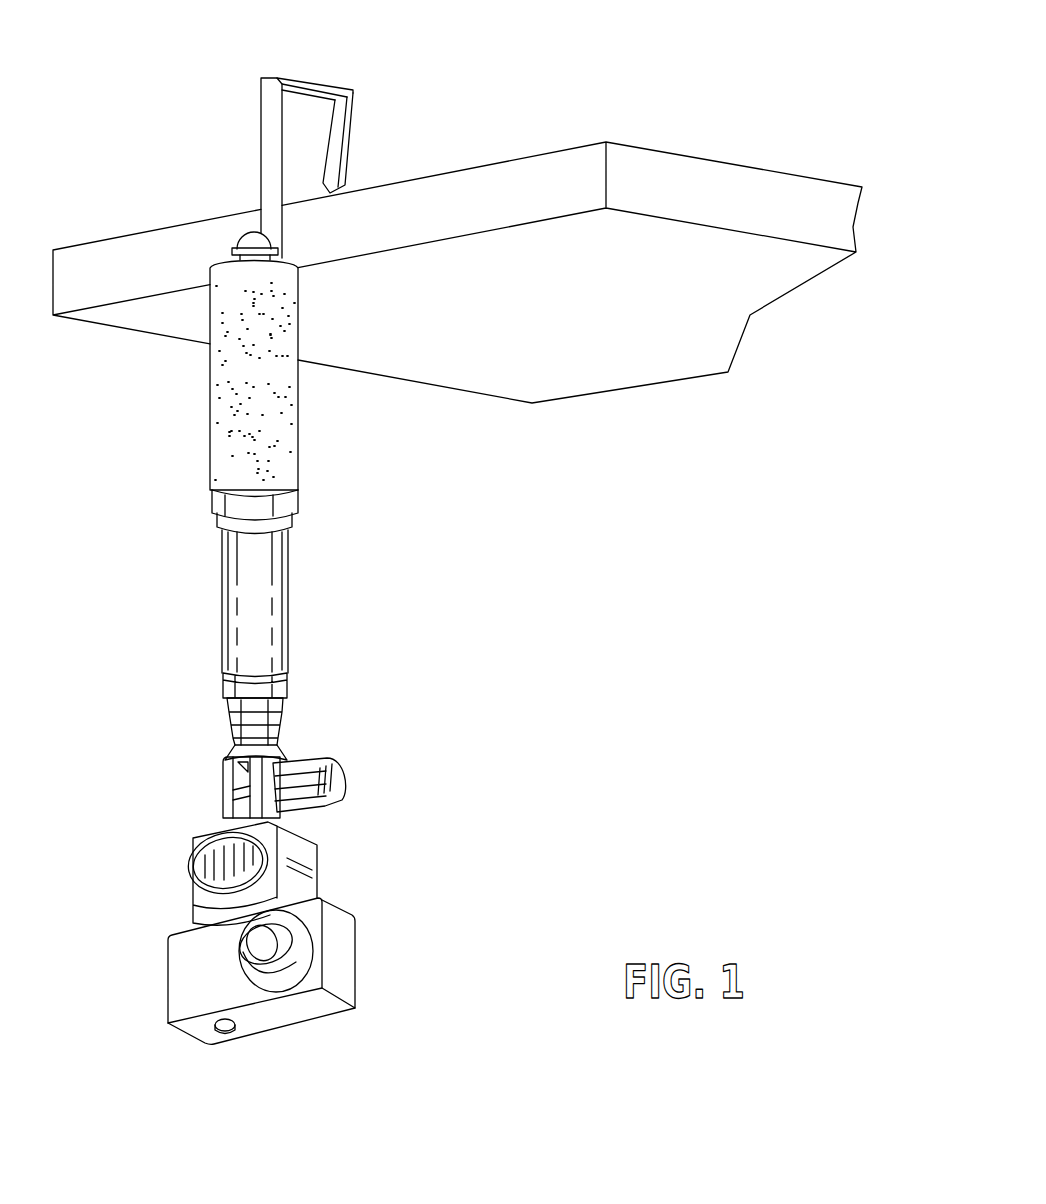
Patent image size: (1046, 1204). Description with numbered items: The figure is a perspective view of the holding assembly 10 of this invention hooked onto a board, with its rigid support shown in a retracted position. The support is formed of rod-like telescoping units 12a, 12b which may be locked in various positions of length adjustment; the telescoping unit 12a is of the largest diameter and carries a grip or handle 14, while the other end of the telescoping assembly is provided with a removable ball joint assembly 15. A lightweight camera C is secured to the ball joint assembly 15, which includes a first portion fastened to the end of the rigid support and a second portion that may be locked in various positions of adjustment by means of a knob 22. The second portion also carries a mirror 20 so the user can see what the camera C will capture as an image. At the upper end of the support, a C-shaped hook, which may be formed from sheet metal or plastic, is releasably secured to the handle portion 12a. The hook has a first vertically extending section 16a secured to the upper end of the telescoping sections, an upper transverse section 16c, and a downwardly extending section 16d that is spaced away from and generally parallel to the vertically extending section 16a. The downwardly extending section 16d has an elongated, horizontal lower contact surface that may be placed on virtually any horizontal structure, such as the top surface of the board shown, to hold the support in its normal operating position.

The holding assembly 10 is at (528, 643).
The telescoping unit 12a is at (242, 503).
The telescoping unit 12b is at (275, 585).
The grip or handle 14 is at (298, 447).
The ball joint assembly 15 is at (227, 780).
The vertically extending section 16a is at (261, 155).
The upper transverse section 16c is at (317, 78).
The downwardly extending section 16d is at (350, 137).
The mirror 20 is at (222, 867).
The knob 22 is at (343, 780).
The camera C is at (338, 942).